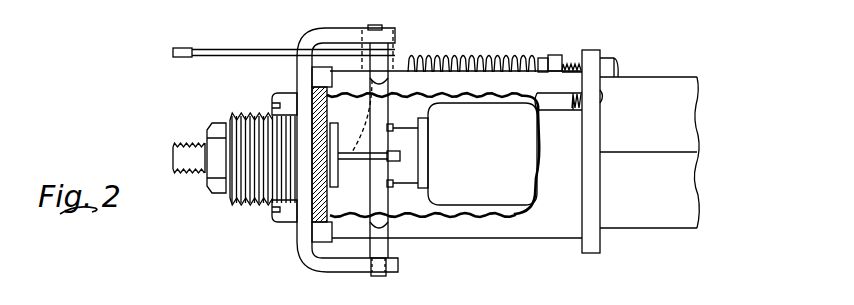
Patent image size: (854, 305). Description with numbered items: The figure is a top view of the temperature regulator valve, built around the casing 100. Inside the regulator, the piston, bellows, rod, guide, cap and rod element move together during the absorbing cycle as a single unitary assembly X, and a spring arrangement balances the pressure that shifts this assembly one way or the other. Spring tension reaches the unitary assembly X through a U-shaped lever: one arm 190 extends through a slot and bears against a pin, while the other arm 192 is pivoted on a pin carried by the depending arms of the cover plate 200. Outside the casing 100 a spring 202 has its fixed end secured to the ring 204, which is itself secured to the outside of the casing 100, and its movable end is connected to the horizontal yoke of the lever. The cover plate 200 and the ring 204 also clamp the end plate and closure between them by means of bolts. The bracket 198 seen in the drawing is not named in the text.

The casing 100 is at (679, 116).
The arm 190 is at (389, 160).
The arm 192 is at (218, 58).
The bracket 198 is at (340, 263).
The cover plate 200 is at (303, 223).
The spring 202 is at (487, 53).
The ring 204 is at (589, 54).
The unitary assembly X is at (472, 180).